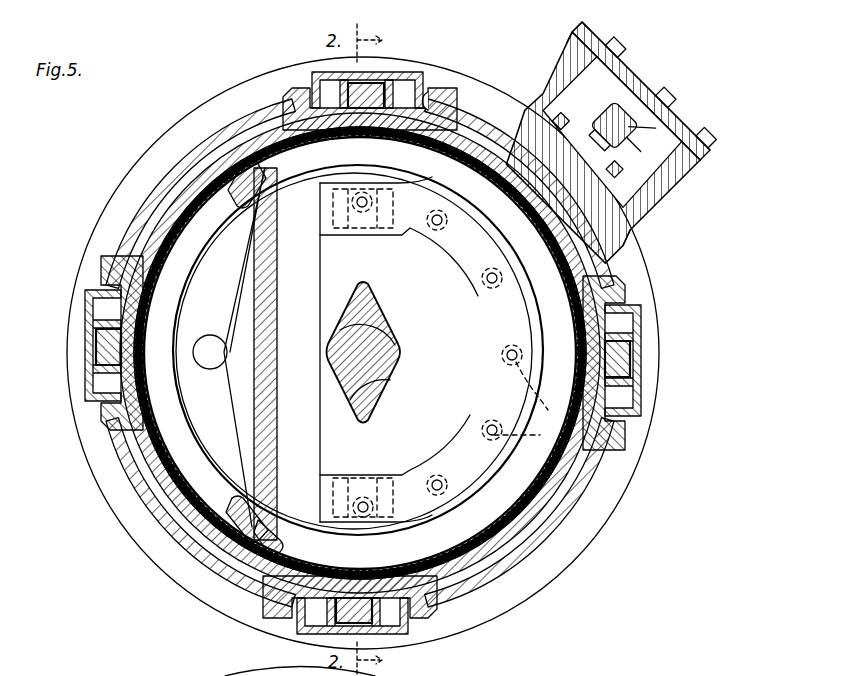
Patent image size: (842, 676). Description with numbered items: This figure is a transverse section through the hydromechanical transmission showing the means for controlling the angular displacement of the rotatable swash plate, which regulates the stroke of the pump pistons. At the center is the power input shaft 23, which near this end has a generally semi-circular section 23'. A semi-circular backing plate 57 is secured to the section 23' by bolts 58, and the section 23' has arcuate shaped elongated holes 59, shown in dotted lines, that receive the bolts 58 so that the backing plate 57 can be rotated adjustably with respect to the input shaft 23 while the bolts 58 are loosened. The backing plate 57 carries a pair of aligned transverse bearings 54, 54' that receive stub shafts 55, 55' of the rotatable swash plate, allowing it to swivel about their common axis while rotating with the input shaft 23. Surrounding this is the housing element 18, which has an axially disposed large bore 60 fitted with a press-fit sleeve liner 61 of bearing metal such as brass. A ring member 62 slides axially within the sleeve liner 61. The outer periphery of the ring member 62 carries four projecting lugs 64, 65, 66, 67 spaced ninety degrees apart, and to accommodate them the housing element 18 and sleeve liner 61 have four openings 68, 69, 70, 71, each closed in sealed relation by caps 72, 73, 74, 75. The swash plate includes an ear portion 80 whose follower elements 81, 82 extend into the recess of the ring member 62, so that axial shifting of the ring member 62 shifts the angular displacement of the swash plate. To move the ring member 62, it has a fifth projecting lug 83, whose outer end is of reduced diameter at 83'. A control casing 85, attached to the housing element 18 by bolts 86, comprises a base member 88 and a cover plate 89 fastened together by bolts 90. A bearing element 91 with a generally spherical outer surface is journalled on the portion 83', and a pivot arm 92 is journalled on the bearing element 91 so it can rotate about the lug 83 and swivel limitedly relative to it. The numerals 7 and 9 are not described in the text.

The valve assembly 7 is at (684, 76).
The housing assembly 9 is at (672, 364).
The housing element 18 is at (146, 221).
The power input shaft 23 is at (380, 352).
The semi-circular section 23' is at (311, 352).
The transverse bearing 54 is at (399, 222).
The transverse bearing 54' is at (395, 468).
The stub shaft 55 is at (368, 227).
The stub shaft 55' is at (363, 476).
The backing plate 57 is at (500, 302).
The bolts 58 is at (362, 198).
The arcuate shaped elongated holes 59 is at (535, 400).
The large bore 60 is at (465, 132).
The sleeve liner 61 is at (210, 145).
The ring member 62 is at (190, 200).
The projecting lug 64 is at (372, 90).
The projecting lug 65 is at (628, 350).
The projecting lug 66 is at (385, 600).
The projecting lug 67 is at (105, 354).
The opening 68 is at (432, 92).
The opening 69 is at (632, 418).
The opening 70 is at (300, 585).
The opening 71 is at (118, 304).
The cap 72 is at (318, 76).
The cap 73 is at (638, 308).
The cap 74 is at (418, 635).
The cap 75 is at (96, 397).
The ear portion 80 is at (276, 348).
The follower element 81 is at (268, 170).
The follower element 82 is at (260, 515).
The fifth projecting lug 83 is at (588, 147).
The reduced diameter portion 83' is at (631, 139).
The control casing 85 is at (696, 172).
The bolts 86 is at (620, 140).
The base member 88 is at (568, 80).
The cover plate 89 is at (632, 76).
The bolts 90 is at (618, 44).
The bearing element 91 is at (614, 118).
The pivot arm 92 is at (600, 120).